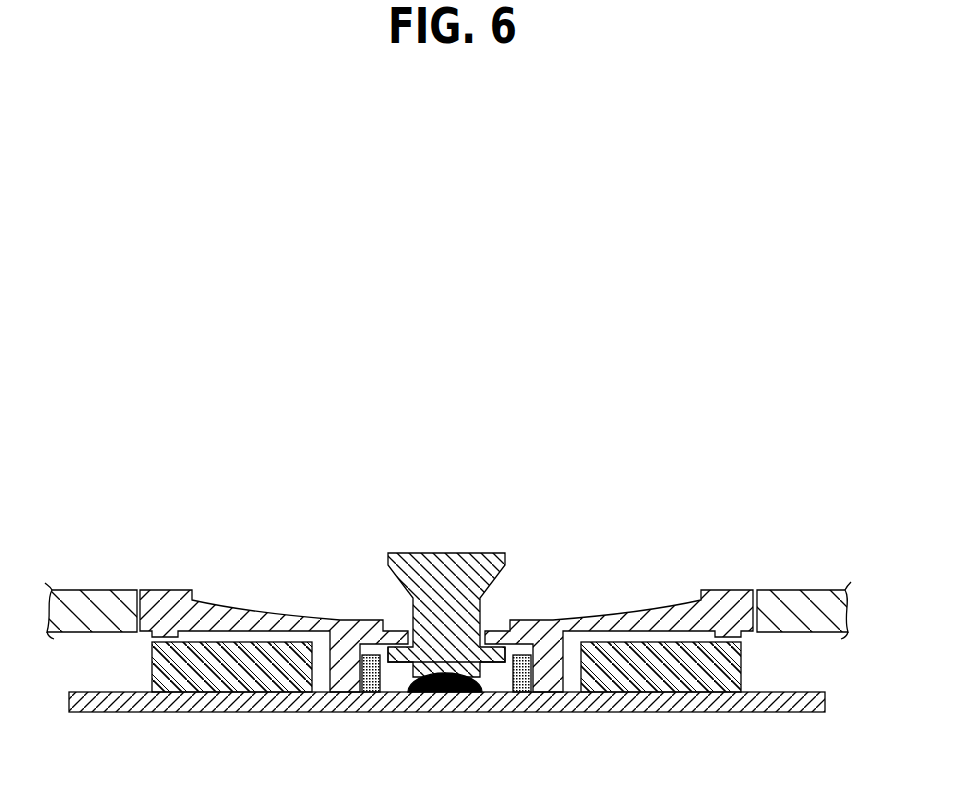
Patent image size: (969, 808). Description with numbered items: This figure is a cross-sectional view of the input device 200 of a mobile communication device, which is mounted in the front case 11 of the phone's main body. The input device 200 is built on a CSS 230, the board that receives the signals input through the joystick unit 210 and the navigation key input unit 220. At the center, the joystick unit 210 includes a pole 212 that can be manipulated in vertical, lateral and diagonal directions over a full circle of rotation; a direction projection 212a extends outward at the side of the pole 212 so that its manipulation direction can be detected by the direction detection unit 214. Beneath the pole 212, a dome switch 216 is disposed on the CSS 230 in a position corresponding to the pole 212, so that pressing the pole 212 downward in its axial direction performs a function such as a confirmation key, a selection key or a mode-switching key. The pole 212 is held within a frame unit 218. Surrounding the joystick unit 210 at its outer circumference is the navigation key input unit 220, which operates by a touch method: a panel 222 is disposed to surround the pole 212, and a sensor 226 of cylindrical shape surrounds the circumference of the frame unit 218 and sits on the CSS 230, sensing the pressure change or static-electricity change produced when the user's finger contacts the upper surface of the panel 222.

The front case 11 is at (803, 620).
The input device 200 is at (454, 573).
The joystick unit 210 is at (552, 573).
The pole 212 is at (449, 616).
The direction projection 212a is at (505, 659).
The direction detection unit 214 is at (517, 657).
The dome switch 216 is at (455, 677).
The frame unit 218 is at (619, 564).
The navigation key input unit 220 is at (433, 532).
The panel 222 is at (207, 618).
The sensor 226 is at (160, 650).
The CSS 230 is at (717, 697).